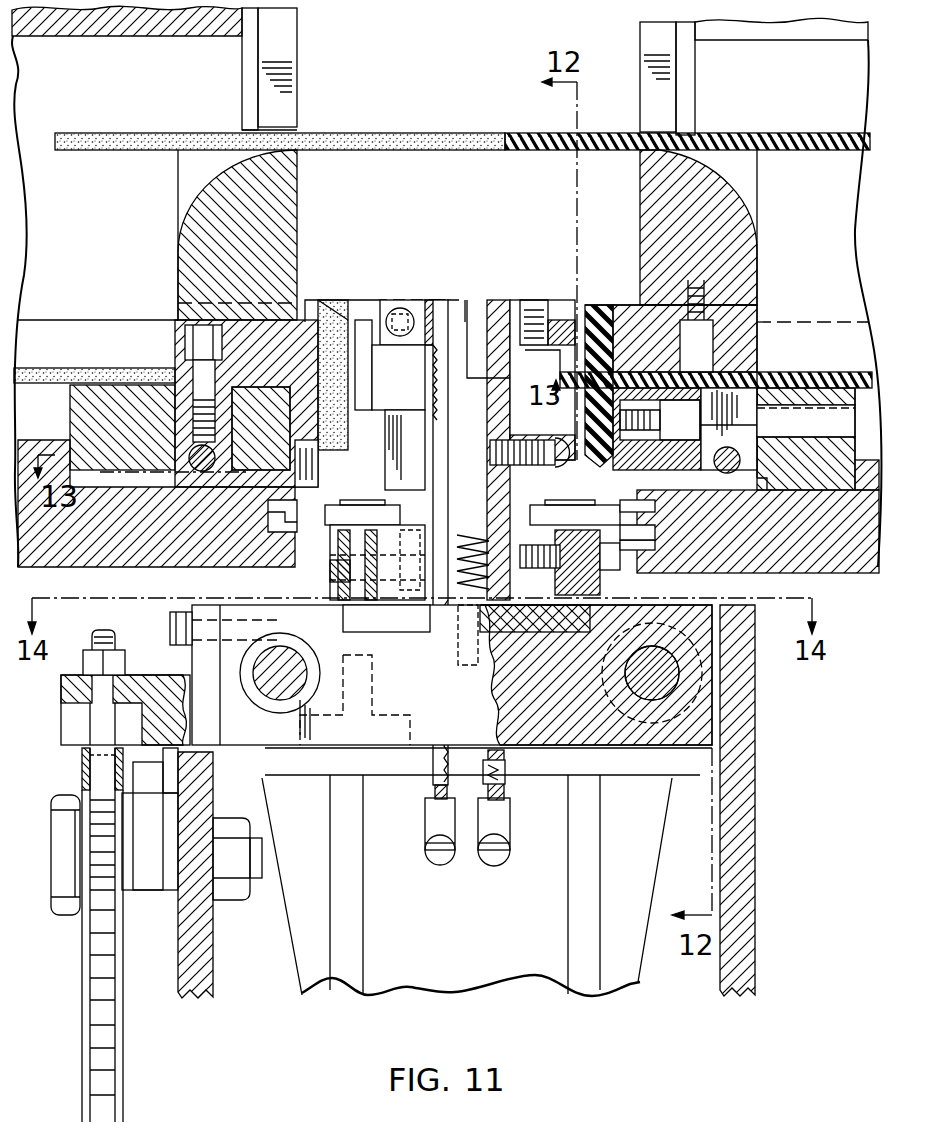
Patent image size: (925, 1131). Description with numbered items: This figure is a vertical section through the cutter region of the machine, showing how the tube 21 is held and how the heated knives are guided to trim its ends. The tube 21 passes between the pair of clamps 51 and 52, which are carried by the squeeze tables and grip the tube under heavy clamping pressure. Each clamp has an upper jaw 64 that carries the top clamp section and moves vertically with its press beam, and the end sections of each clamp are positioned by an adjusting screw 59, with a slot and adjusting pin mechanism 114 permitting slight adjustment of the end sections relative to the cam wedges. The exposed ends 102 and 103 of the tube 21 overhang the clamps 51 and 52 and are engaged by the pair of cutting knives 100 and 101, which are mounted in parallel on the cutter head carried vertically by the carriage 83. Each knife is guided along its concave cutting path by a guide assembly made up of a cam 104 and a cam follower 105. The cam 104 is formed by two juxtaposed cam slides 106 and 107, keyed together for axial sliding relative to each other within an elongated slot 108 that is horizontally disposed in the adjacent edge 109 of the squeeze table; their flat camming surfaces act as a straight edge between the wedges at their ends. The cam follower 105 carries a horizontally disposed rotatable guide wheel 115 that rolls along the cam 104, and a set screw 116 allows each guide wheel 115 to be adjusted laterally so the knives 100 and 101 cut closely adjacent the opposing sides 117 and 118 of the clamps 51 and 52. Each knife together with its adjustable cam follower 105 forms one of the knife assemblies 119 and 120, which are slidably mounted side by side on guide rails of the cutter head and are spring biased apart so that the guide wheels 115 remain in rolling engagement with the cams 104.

The tube 21 is at (372, 133).
The upper jaw 64 is at (228, 182).
The opposing side of tube clamp 118 is at (375, 300).
The knife assembly 120 is at (440, 300).
The knife assembly 119 is at (492, 300).
The cutting knife 100 is at (560, 300).
The opposing side of tube clamp 117 is at (580, 300).
The clamp 51 is at (600, 305).
The clamp 52 is at (305, 300).
The cutting knife 101 is at (372, 322).
The adjusting mechanism 114 is at (190, 340).
The exposed end of tube 103 is at (395, 366).
The exposed end of tube 102 is at (570, 378).
The cam 104 is at (312, 462).
The cam follower 105 is at (375, 505).
The guide wheel 115 is at (535, 492).
The adjacent edge of squeeze table 109 is at (640, 482).
The elongated slot 108 is at (660, 502).
The cam slide 106 is at (270, 512).
The cam slide 107 is at (672, 536).
The adjusting screw 59 is at (200, 472).
The set screw 116 is at (330, 580).
The carriage 83 is at (755, 785).